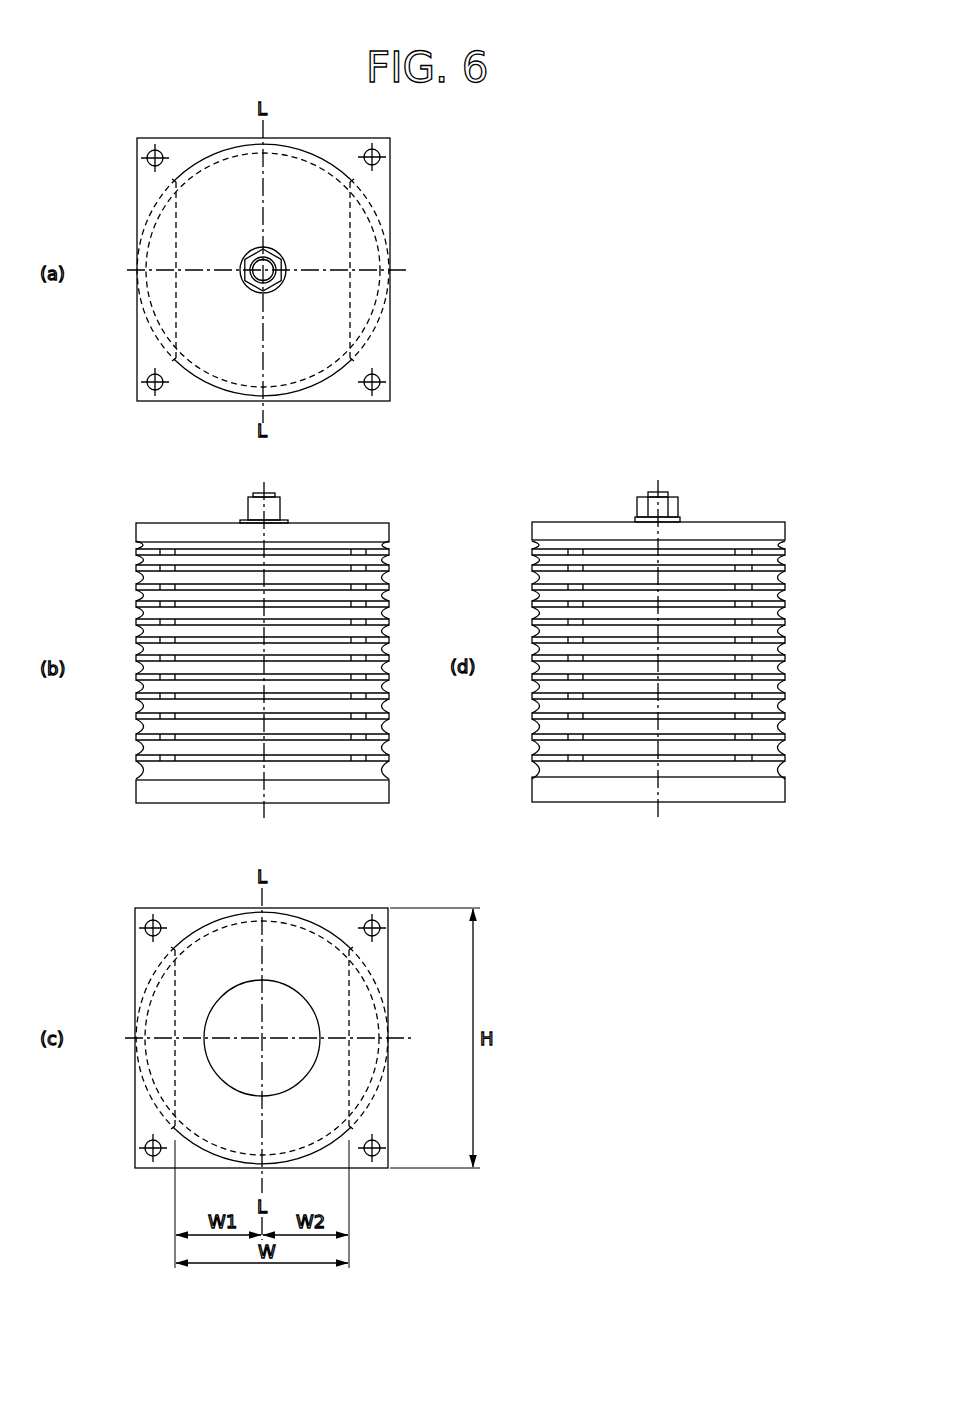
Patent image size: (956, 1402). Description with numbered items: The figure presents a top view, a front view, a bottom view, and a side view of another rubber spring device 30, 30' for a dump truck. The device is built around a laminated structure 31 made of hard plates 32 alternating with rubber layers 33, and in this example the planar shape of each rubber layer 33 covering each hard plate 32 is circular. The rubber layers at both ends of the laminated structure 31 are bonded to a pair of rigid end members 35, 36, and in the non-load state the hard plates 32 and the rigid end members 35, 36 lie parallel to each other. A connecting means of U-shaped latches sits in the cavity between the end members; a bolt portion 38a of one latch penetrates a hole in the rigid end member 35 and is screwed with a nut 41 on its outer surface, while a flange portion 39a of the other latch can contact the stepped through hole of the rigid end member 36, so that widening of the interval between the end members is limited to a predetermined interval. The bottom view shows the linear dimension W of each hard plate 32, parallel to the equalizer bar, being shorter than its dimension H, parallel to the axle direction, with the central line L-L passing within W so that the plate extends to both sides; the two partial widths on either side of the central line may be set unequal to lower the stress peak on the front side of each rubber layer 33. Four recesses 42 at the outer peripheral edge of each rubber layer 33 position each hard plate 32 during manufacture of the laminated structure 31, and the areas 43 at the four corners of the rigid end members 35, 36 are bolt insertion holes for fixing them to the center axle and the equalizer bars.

The rubber spring device 30 is at (286, 640).
The rubber spring device 30' is at (381, 640).
The laminated structure 31 is at (124, 578).
The hard plate 32 is at (330, 302).
The rubber layer 33 is at (355, 328).
The rigid end member 35 is at (373, 200).
The rigid end member 36 is at (157, 787).
The bolt portion 38a is at (268, 258).
The flange portion 39a is at (280, 1060).
The nut 41 is at (252, 257).
The recess 42 is at (172, 190).
The bolt insertion hole 43 is at (151, 151).